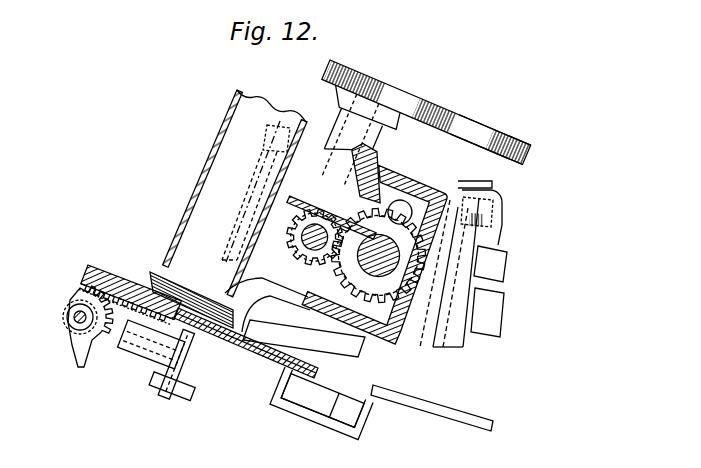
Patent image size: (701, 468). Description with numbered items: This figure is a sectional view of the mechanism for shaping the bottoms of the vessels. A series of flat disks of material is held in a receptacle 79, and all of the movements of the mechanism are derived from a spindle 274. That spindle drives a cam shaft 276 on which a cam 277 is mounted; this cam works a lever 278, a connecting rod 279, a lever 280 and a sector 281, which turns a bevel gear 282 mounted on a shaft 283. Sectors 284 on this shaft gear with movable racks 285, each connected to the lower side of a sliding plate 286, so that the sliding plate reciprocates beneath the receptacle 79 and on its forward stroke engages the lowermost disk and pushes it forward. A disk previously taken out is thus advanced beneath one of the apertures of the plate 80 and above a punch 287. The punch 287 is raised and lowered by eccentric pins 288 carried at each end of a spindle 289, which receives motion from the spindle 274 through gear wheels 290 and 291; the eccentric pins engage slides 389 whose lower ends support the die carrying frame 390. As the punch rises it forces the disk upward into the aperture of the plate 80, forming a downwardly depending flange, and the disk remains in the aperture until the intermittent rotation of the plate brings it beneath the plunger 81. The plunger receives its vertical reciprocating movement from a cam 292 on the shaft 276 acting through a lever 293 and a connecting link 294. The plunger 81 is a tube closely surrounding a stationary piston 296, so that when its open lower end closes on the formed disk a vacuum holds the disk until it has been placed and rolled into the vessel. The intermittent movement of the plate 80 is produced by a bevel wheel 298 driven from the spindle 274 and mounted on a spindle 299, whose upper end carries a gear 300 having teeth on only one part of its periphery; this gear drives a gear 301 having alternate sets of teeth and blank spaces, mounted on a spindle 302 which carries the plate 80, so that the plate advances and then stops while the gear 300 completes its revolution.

The receptacle 79 is at (214, 131).
The plate 80 is at (465, 419).
The plunger 81 is at (437, 357).
The spindle 274 is at (298, 250).
The cam shaft 276 is at (464, 313).
The cam 277 is at (236, 222).
The lever 278 is at (253, 162).
The connecting rod 279 is at (218, 243).
The lever 280 is at (186, 385).
The sector 281 is at (82, 368).
The bevel gear 282 is at (65, 318).
The shaft 283 is at (70, 335).
The sectors 284 is at (82, 292).
The movable racks 285 is at (84, 275).
The sliding plate 286 is at (106, 264).
The punch 287 is at (326, 386).
The eccentric pins 288 is at (254, 343).
The spindle 289 is at (394, 208).
The gear wheel 290 is at (358, 276).
The gear wheel 291 is at (230, 277).
The cam 292 is at (491, 295).
The lever 293 is at (504, 200).
The connecting link 294 is at (494, 193).
The stationary piston 296 is at (428, 372).
The bevel wheel 298 is at (331, 212).
The spindle 299 is at (346, 127).
The gear 300 is at (397, 91).
The gear 301 is at (463, 122).
The spindle 302 is at (451, 143).
The slides 389 is at (300, 318).
The die carrying frame 390 is at (333, 403).